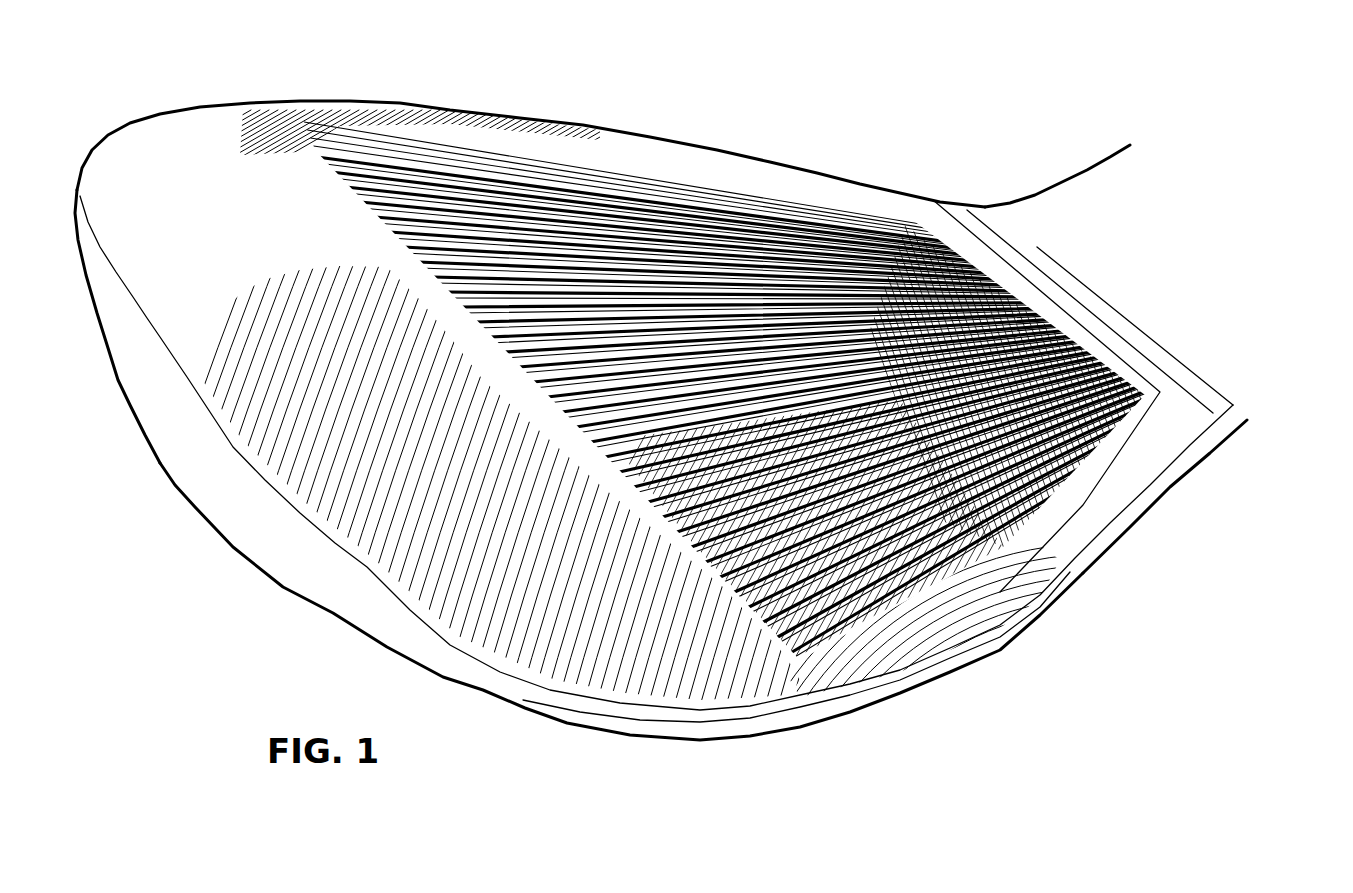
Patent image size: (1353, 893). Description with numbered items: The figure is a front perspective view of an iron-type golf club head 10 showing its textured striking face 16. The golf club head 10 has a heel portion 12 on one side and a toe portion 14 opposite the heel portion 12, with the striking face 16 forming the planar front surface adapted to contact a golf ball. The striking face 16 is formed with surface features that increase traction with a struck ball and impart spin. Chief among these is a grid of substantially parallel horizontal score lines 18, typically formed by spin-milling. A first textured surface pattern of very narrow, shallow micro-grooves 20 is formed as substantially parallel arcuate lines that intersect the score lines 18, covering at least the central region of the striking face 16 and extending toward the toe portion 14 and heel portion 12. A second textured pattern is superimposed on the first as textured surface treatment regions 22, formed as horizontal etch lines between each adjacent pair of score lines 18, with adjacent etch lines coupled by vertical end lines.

The golf club head 10 is at (713, 100).
The heel portion 12 is at (1270, 437).
The toe portion 14 is at (160, 493).
The striking face 16 is at (566, 125).
The score lines 18 is at (1060, 430).
The micro-grooves 20 is at (513, 640).
The textured surface treatment regions 22 is at (852, 645).